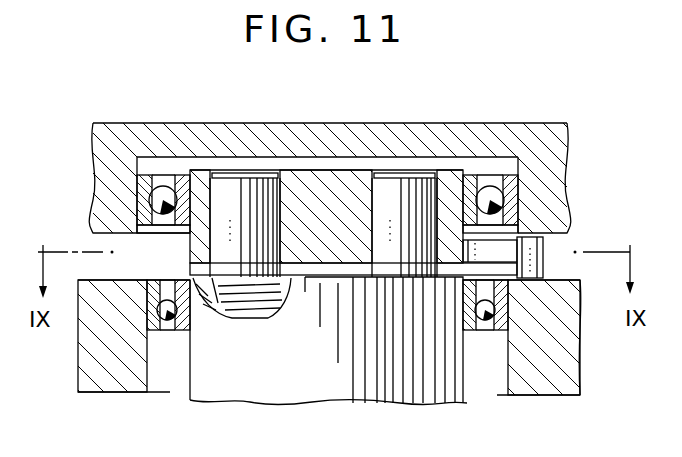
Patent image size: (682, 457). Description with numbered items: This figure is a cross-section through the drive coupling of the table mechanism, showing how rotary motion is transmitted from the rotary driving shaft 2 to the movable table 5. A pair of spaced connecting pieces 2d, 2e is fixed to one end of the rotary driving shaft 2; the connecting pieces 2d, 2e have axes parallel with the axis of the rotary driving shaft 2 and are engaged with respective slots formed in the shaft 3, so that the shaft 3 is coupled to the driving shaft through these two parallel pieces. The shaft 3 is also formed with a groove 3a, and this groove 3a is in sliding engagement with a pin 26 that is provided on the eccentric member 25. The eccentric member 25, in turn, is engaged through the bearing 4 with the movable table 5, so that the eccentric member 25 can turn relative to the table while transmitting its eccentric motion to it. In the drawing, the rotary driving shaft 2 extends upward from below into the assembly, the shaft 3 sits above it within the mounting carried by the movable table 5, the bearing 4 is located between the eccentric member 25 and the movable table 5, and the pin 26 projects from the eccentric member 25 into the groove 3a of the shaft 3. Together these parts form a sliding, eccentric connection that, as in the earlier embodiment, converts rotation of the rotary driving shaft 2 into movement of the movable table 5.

The rotary driving shaft 2 is at (454, 374).
The connecting piece 2d is at (413, 183).
The connecting piece 2e is at (238, 183).
The shaft 3 is at (453, 178).
The groove 3a is at (503, 248).
The bearing 4 is at (493, 180).
The movable table 5 is at (336, 132).
The eccentric member 25 is at (570, 337).
The pin 26 is at (543, 250).